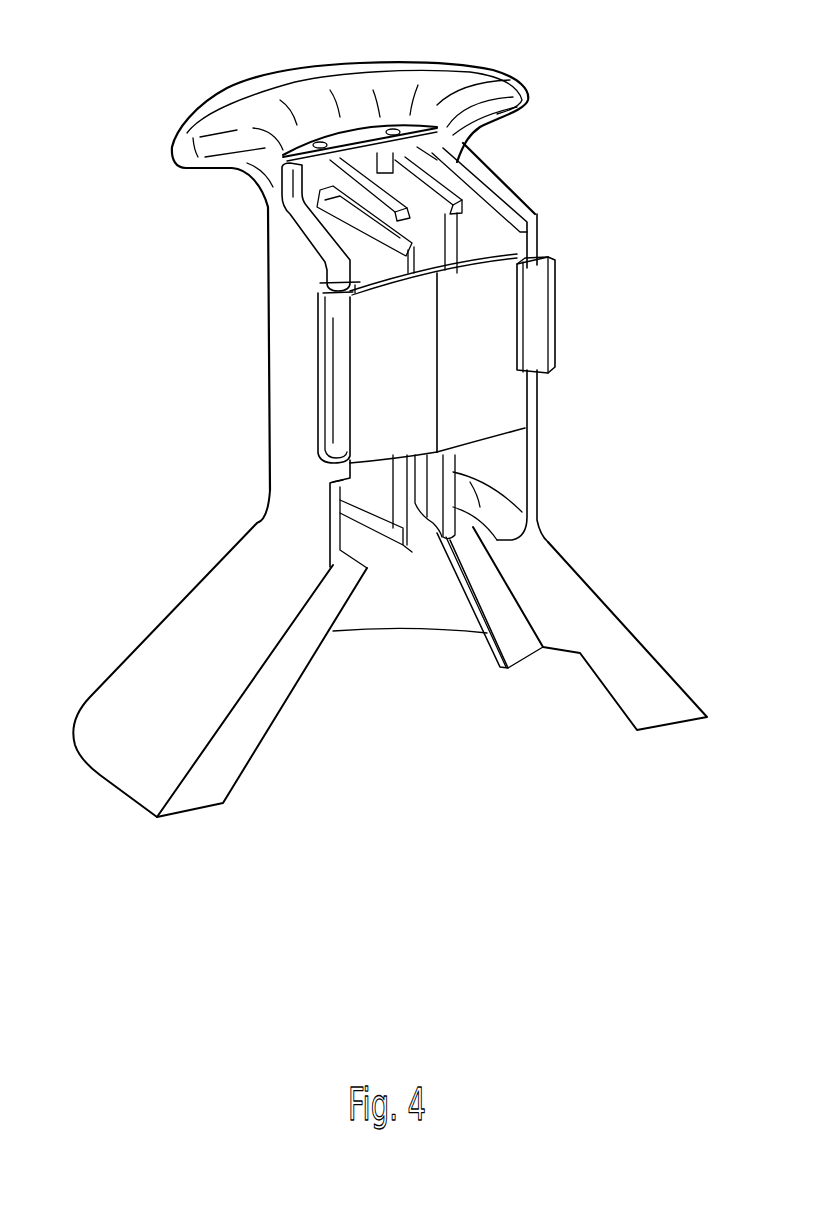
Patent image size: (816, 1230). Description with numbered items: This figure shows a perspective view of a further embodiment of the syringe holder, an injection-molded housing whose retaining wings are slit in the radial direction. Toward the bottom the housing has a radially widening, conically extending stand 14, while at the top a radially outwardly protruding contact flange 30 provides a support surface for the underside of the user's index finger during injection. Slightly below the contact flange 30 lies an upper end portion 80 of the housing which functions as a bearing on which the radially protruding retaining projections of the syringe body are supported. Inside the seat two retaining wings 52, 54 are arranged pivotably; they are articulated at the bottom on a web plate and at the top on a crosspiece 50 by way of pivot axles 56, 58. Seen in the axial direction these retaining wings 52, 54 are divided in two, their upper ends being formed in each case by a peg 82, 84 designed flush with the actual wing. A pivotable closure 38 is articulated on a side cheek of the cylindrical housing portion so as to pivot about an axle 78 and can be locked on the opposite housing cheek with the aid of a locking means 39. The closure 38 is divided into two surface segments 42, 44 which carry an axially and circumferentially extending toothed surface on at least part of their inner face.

The stand 14 is at (120, 700).
The contact flange 30 is at (228, 110).
The pivotable closure 38 is at (568, 444).
The locking means 39 is at (542, 307).
The surface segment 42 is at (500, 393).
The surface segment 44 is at (383, 373).
The crosspiece 50 is at (360, 80).
The retaining wing 52 is at (436, 522).
The retaining wing 54 is at (383, 530).
The pivot axle 56 is at (393, 129).
The pivot axle 58 is at (320, 142).
The axle 78 is at (337, 438).
The upper end portion 80 is at (323, 260).
The peg 82 is at (440, 183).
The peg 84 is at (348, 190).